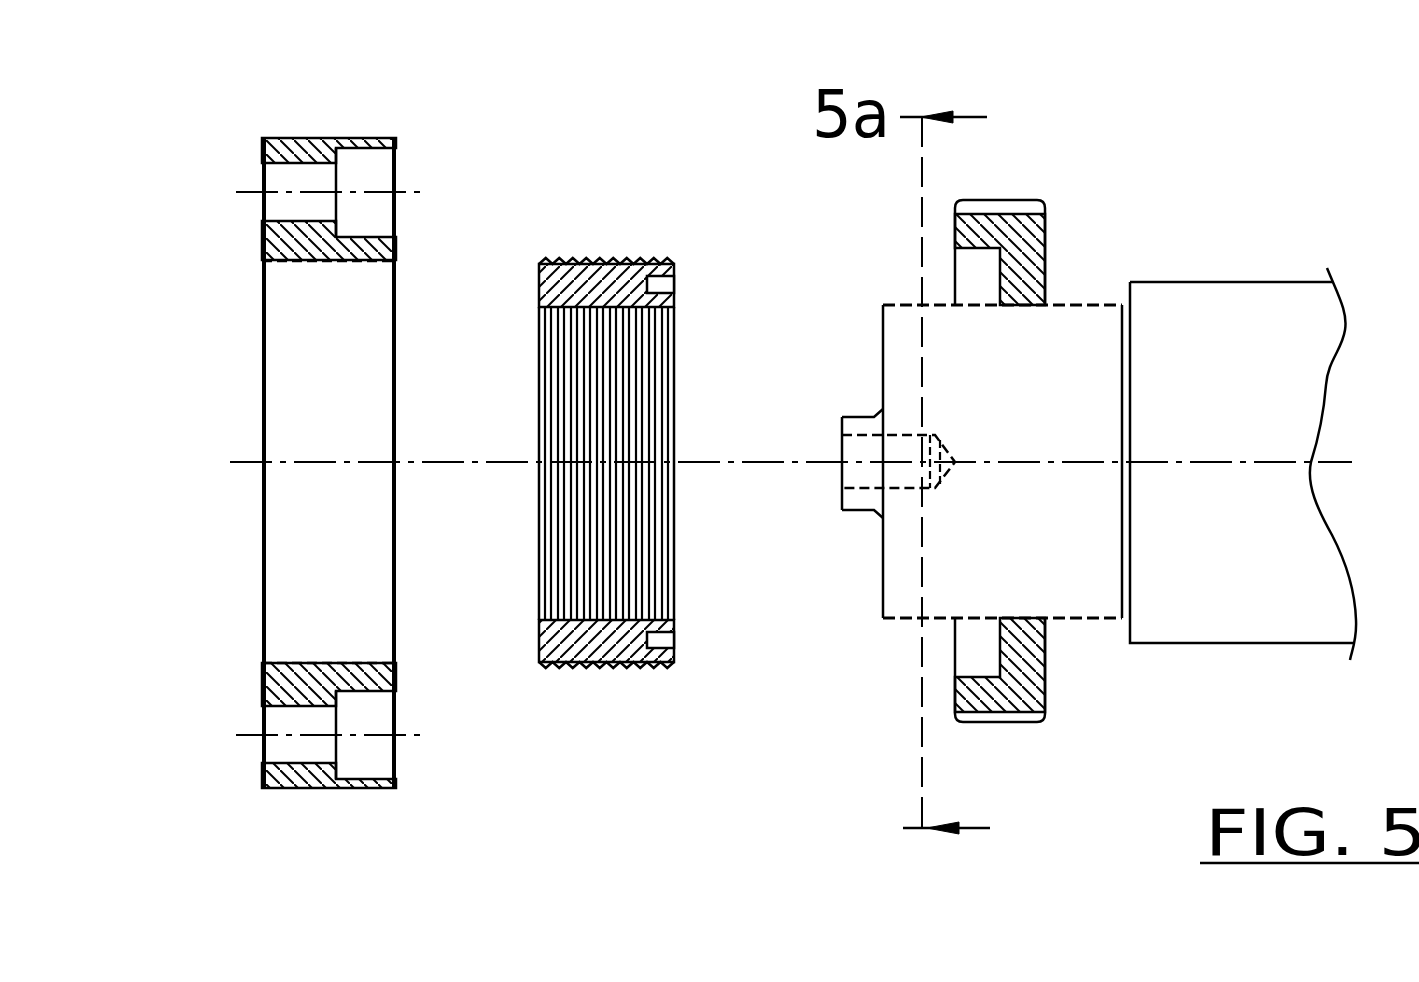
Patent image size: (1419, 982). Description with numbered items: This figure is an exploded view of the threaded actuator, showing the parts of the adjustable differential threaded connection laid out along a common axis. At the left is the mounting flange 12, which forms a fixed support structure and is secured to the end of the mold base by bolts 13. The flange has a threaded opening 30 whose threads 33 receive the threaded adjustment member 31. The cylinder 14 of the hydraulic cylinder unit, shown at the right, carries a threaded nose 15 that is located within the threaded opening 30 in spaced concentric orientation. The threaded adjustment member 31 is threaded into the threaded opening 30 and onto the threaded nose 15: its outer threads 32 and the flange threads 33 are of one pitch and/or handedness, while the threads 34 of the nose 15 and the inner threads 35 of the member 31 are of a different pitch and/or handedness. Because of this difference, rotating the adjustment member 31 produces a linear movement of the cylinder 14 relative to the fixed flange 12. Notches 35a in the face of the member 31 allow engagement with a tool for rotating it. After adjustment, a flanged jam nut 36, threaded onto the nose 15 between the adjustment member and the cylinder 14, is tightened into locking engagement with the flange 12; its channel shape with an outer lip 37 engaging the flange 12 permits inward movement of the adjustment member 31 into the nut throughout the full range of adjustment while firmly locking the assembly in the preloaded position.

The mounting flange 12 is at (292, 138).
The bolts 13 is at (383, 753).
The cylinder 14 is at (1265, 450).
The threaded nose 15 is at (910, 312).
The threaded opening 30 is at (300, 420).
The threaded adjustment member 31 is at (645, 750).
The threads 32 is at (590, 260).
The threads 33 is at (362, 266).
The threads 34 is at (915, 620).
The threads 35 is at (652, 625).
The notches 35a is at (673, 290).
The flanged jam nut 36 is at (1040, 237).
The outer lip 37 is at (957, 695).